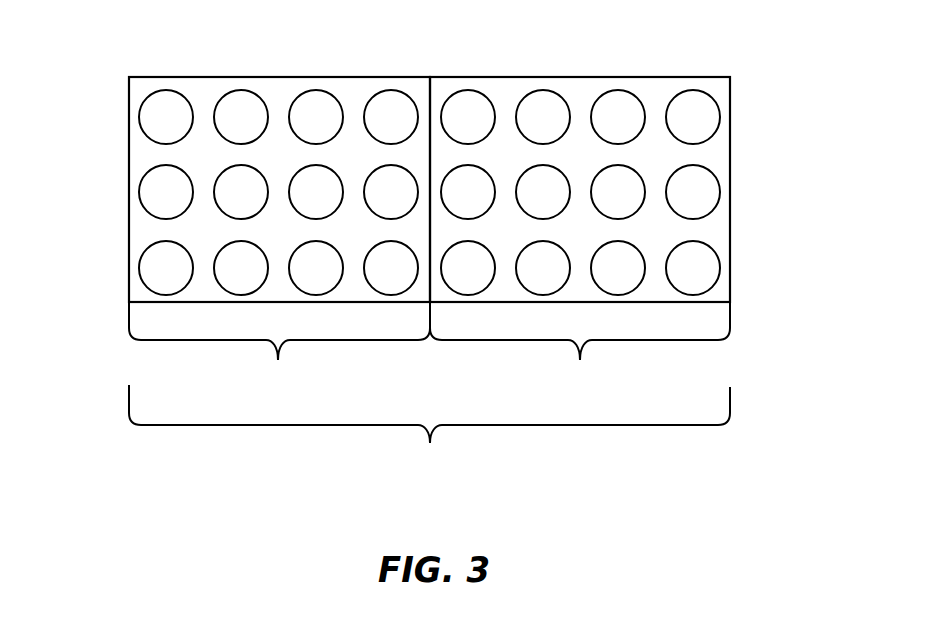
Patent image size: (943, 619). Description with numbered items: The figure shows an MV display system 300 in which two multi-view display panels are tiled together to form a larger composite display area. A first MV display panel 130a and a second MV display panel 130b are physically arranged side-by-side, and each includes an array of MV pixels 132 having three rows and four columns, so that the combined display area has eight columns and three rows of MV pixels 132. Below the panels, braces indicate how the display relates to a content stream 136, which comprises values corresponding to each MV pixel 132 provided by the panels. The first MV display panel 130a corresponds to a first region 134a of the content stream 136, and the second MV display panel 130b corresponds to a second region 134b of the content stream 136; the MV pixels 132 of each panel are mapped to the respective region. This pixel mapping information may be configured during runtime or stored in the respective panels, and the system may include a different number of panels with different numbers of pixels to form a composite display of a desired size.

The MV display system 300 is at (735, 61).
The first MV display panel 130a is at (183, 76).
The second MV display panel 130b is at (487, 76).
The MV pixels 132 is at (158, 168).
The first region 134a is at (279, 352).
The second region 134b is at (580, 352).
The content stream 136 is at (429, 437).